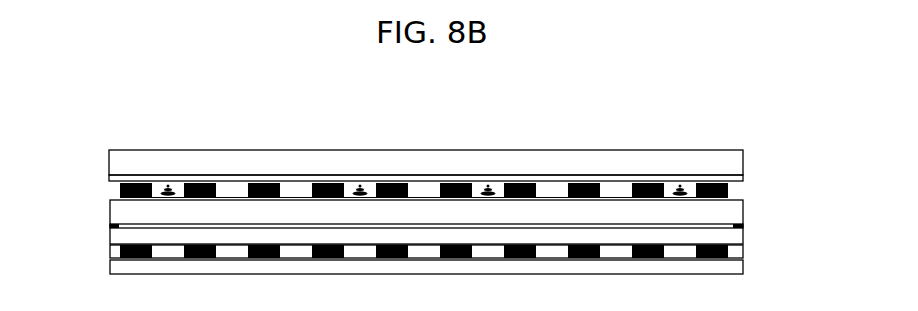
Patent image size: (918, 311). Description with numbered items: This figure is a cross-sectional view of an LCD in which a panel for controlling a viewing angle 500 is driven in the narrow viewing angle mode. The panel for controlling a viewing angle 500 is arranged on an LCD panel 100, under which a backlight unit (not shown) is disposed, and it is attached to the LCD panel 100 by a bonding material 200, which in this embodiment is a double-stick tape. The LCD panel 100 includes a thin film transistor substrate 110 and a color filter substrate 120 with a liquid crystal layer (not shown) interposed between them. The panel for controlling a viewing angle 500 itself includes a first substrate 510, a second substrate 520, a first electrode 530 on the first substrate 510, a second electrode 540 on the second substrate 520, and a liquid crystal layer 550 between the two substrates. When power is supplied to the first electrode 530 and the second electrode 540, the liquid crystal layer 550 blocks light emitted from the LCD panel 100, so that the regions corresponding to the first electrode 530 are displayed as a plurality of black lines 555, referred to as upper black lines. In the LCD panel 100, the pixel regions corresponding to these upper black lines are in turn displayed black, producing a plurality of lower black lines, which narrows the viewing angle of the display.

The LCD panel 100 is at (819, 238).
The thin film transistor substrate 110 is at (743, 266).
The color filter substrate 120 is at (743, 244).
The bonding material 200 is at (743, 226).
The panel for controlling a viewing angle 500 is at (753, 142).
The first substrate 510 is at (743, 204).
The second substrate 520 is at (109, 155).
The first electrode 530 is at (730, 187).
The second electrode 540 is at (109, 178).
The liquid crystal layer 550 is at (158, 195).
The black lines 555 is at (120, 188).